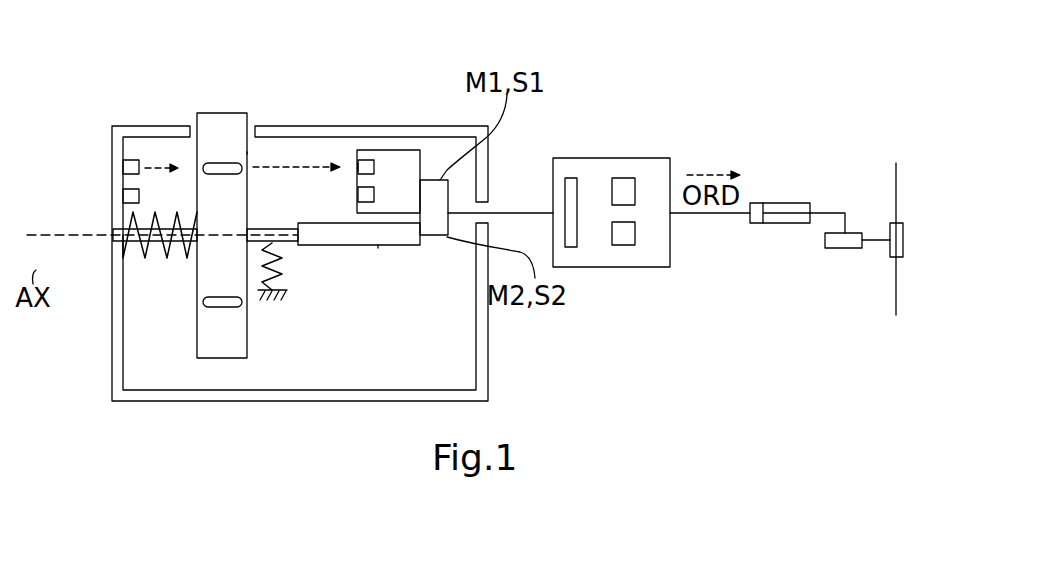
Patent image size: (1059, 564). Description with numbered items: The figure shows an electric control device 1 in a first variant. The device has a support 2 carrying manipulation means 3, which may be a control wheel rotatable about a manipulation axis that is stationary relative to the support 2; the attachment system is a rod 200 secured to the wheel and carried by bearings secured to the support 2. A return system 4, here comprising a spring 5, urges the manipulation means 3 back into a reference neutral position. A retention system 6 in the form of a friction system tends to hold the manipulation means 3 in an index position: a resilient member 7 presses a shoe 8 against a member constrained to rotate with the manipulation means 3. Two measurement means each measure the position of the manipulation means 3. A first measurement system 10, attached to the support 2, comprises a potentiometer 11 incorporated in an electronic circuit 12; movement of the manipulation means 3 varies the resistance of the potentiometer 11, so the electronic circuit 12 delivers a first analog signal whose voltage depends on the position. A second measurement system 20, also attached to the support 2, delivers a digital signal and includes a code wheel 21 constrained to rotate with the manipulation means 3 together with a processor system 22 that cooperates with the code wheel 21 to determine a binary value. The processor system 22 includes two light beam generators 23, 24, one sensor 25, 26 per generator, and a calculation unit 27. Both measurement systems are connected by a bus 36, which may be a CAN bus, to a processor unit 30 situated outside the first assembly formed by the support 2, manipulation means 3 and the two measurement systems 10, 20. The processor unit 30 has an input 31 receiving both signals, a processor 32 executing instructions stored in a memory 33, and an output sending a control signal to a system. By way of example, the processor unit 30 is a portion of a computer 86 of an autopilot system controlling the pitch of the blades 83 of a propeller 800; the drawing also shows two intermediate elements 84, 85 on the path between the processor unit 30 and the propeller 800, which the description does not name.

The electric control device 1 is at (603, 390).
The support 2 is at (262, 402).
The manipulation means 3 is at (209, 90).
The return system 4 is at (152, 267).
The spring 5 is at (177, 255).
The retention system 6 is at (275, 315).
The resilient member 7 is at (285, 287).
The shoe 8 is at (287, 263).
The first measurement system 10 is at (443, 297).
The potentiometer 11 is at (340, 260).
The electronic circuit 12 is at (378, 247).
The second measurement system 20 is at (437, 152).
The code wheel 21 is at (247, 152).
The processor system 22 is at (388, 146).
The light beam generator 23 is at (122, 168).
The light beam generator 24 is at (122, 201).
The sensor 25 is at (368, 163).
The sensor 26 is at (358, 193).
The calculation unit 27 is at (411, 163).
The processor unit 30 is at (671, 174).
The input 31 is at (577, 188).
The processor 32 is at (622, 178).
The memory 33 is at (622, 247).
The bus 36 is at (507, 211).
The blades 83 is at (896, 295).
The transmission element 84 is at (845, 248).
The damper element 85 is at (800, 203).
The computer 86 is at (658, 158).
The rod 200 is at (279, 220).
The propeller 800 is at (905, 335).